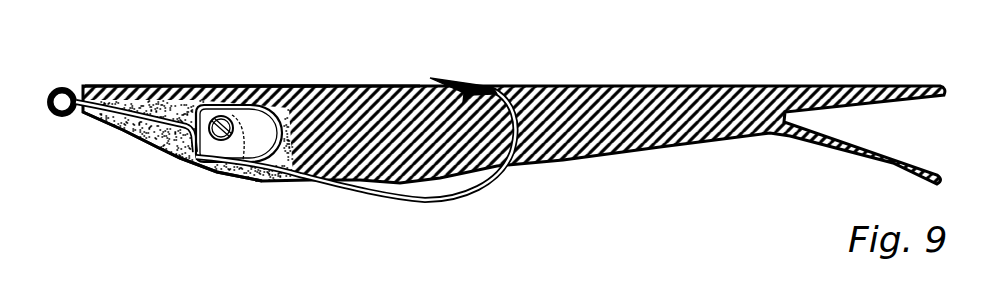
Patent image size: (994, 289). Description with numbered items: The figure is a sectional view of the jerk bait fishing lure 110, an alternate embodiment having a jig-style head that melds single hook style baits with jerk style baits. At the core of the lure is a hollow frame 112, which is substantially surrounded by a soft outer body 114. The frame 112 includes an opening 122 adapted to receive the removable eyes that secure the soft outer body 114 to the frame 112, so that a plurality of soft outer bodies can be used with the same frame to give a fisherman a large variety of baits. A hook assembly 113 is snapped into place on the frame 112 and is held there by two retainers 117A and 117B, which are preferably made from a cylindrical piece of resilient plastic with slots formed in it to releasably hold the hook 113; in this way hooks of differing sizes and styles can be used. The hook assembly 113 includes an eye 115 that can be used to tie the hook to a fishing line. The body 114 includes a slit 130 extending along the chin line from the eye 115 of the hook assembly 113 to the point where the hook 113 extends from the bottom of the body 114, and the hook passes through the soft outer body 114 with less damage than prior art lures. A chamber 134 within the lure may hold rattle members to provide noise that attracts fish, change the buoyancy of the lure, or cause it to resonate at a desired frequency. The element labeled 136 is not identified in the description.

The jerk bait fishing lure 110 is at (351, 78).
The hollow frame 112 is at (232, 28).
The hook assembly 113 is at (328, 88).
The soft outer body 114 is at (272, 40).
The eye 115 is at (63, 88).
The retainer 117A is at (163, 118).
The retainer 117B is at (237, 206).
The opening 122 is at (181, 171).
The slit 130 is at (141, 142).
The chamber 134 is at (282, 216).
The hook keeper 136 is at (214, 172).